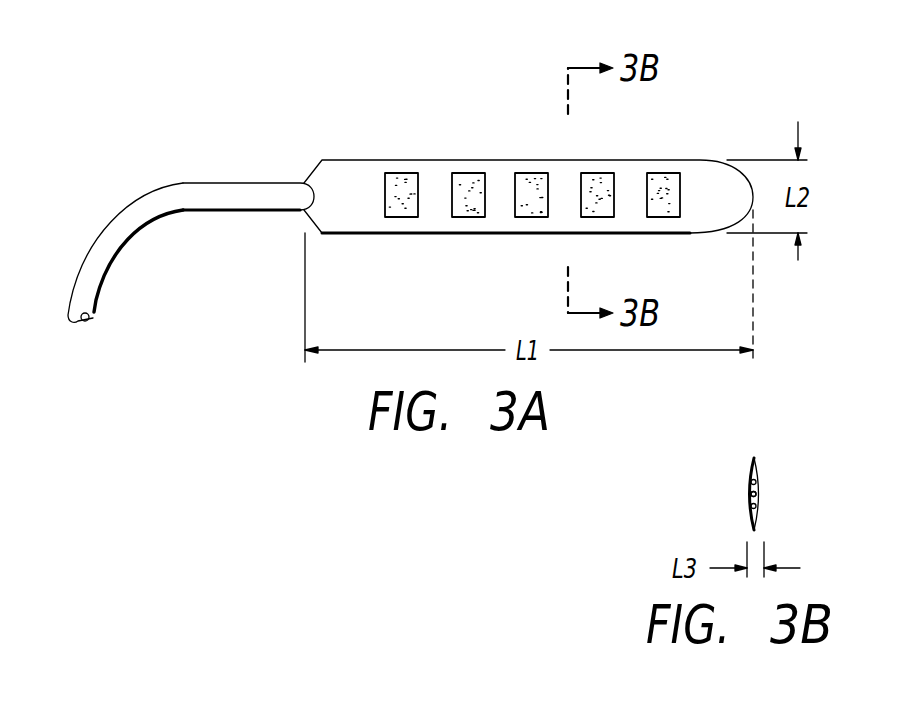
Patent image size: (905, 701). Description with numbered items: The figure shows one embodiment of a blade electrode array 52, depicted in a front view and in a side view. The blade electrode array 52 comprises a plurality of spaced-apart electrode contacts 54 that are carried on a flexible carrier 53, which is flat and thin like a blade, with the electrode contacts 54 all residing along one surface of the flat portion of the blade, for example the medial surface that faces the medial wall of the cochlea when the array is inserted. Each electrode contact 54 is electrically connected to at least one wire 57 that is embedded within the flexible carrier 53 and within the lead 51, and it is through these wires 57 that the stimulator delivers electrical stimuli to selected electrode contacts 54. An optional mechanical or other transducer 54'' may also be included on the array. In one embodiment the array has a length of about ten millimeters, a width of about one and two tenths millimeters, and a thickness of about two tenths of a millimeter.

In FIG. 3A, the lead 51 is at (110, 218).
In FIG. 3A, the blade electrode array 52 is at (303, 125).
In FIG. 3A, the flexible carrier 53 is at (352, 236).
In FIG. 3B, the flexible carrier 53 is at (755, 459).
In FIG. 3A, the electrode contacts 54 is at (532, 152).
In FIG. 3B, the electrode contacts 54 is at (714, 471).
In FIG. 3A, the transducer 54'' is at (519, 152).
In FIG. 3B, the wire 57 is at (762, 494).